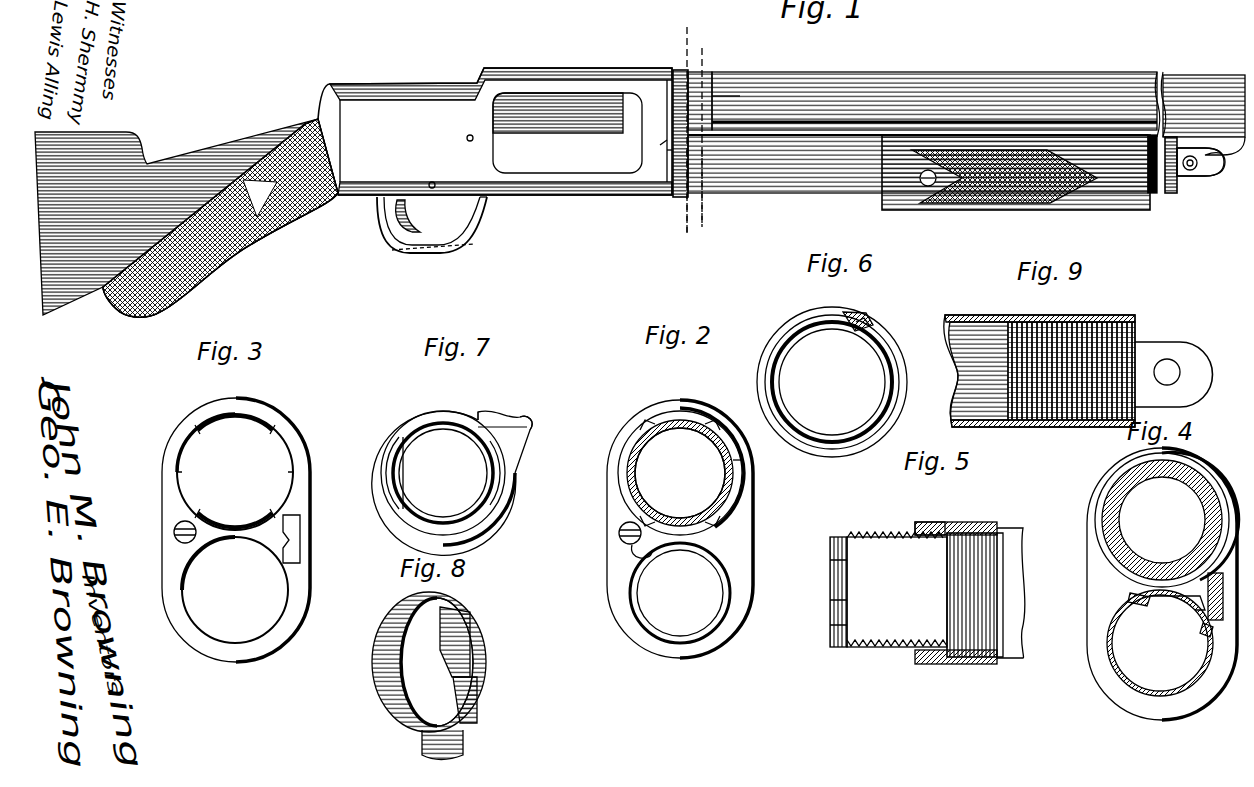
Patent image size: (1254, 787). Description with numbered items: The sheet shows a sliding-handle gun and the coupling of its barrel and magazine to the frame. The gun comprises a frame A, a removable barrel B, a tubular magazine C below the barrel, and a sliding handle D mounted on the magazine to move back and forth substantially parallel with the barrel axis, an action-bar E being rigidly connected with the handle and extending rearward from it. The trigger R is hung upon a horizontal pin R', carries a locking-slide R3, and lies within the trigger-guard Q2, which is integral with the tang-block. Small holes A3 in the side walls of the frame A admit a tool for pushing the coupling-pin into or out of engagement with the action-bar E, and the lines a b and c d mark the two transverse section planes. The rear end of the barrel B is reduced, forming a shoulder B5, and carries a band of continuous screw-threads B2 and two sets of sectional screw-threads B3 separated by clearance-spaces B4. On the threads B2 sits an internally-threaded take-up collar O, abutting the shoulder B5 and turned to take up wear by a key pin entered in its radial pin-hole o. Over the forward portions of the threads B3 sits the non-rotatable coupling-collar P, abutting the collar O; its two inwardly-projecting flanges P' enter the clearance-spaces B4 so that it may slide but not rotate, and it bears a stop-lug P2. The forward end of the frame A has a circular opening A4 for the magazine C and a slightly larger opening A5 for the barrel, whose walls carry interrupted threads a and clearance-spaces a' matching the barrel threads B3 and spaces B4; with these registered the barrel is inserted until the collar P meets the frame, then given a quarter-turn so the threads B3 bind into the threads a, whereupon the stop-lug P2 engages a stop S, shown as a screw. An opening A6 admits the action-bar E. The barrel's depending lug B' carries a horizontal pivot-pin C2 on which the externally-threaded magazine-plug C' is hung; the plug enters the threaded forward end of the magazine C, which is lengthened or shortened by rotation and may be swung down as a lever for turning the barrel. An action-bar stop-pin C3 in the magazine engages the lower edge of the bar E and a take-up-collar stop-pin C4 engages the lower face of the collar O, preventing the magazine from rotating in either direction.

In FIG. 1, the frame A is at (495, 131).
In FIG. 3, the frame A is at (163, 600).
In FIG. 2, the frame A is at (755, 562).
In FIG. 4, the frame A is at (1117, 467).
In FIG. 1, the holes A3 is at (470, 135).
In FIG. 3, the circular opening A4 is at (235, 590).
In FIG. 3, the opening A5 is at (235, 472).
In FIG. 3, the opening A6 is at (290, 550).
In FIG. 4, the opening A6 is at (1208, 600).
In FIG. 1, the trigger R is at (421, 225).
In FIG. 1, the pin R' is at (443, 169).
In FIG. 1, the locking-slide R3 is at (429, 216).
In FIG. 1, the trigger-guard Q2 is at (486, 231).
In FIG. 1, the stop S is at (668, 147).
In FIG. 3, the stop S is at (173, 533).
In FIG. 2, the stop S is at (619, 535).
In FIG. 1, the non-rotatable coupling-collar P is at (673, 120).
In FIG. 7, the non-rotatable coupling-collar P is at (452, 465).
In FIG. 8, the non-rotatable coupling-collar P is at (418, 662).
In FIG. 2, the non-rotatable coupling-collar P is at (688, 471).
In FIG. 5, the non-rotatable coupling-collar P is at (956, 581).
In FIG. 7, the inwardly-projecting flanges P' is at (496, 469).
In FIG. 8, the inwardly-projecting flanges P' is at (457, 665).
In FIG. 2, the inwardly-projecting flanges P' is at (757, 462).
In FIG. 1, the stop-lug P2 is at (667, 150).
In FIG. 7, the stop-lug P2 is at (528, 428).
In FIG. 8, the stop-lug P2 is at (464, 740).
In FIG. 2, the stop-lug P2 is at (640, 556).
In FIG. 1, the take-up collar O is at (708, 72).
In FIG. 6, the take-up collar O is at (838, 313).
In FIG. 5, the take-up collar O is at (948, 516).
In FIG. 4, the take-up collar O is at (1190, 470).
In FIG. 6, the radial pin-hole o is at (863, 325).
In FIG. 1, the interrupted threads a is at (688, 120).
In FIG. 3, the interrupted threads a is at (235, 451).
In FIG. 1, the section line b is at (685, 199).
In FIG. 1, the section line c is at (706, 128).
In FIG. 1, the section line d is at (708, 195).
In FIG. 3, the clearance-spaces a' is at (236, 472).
In FIG. 1, the barrel B is at (978, 94).
In FIG. 7, the barrel B is at (466, 473).
In FIG. 2, the barrel B is at (680, 473).
In FIG. 6, the barrel B is at (832, 382).
In FIG. 5, the barrel B is at (1019, 593).
In FIG. 4, the barrel B is at (1162, 520).
In FIG. 1, the depending lug B' is at (1211, 156).
In FIG. 5, the continuous screw-threads B2 is at (980, 578).
In FIG. 7, the sectional screw-threads B3 is at (392, 452).
In FIG. 2, the sectional screw-threads B3 is at (683, 412).
In FIG. 5, the sectional screw-threads B3 is at (896, 533).
In FIG. 7, the clearance-spaces B4 is at (442, 425).
In FIG. 2, the clearance-spaces B4 is at (626, 467).
In FIG. 5, the clearance-spaces B4 is at (875, 601).
In FIG. 5, the shoulder B5 is at (1003, 530).
In FIG. 1, the tubular magazine C is at (918, 174).
In FIG. 2, the tubular magazine C is at (680, 593).
In FIG. 9, the tubular magazine C is at (1078, 358).
In FIG. 4, the tubular magazine C is at (1160, 643).
In FIG. 1, the magazine-plug C' is at (1162, 176).
In FIG. 9, the magazine-plug C' is at (1071, 352).
In FIG. 1, the pivot-pin C2 is at (1182, 180).
In FIG. 4, the action-bar stop-pin C3 is at (1203, 632).
In FIG. 1, the take-up-collar stop-pin C4 is at (723, 103).
In FIG. 4, the take-up-collar stop-pin C4 is at (1130, 598).
In FIG. 1, the sliding handle D is at (985, 210).
In FIG. 4, the action-bar E is at (1190, 615).